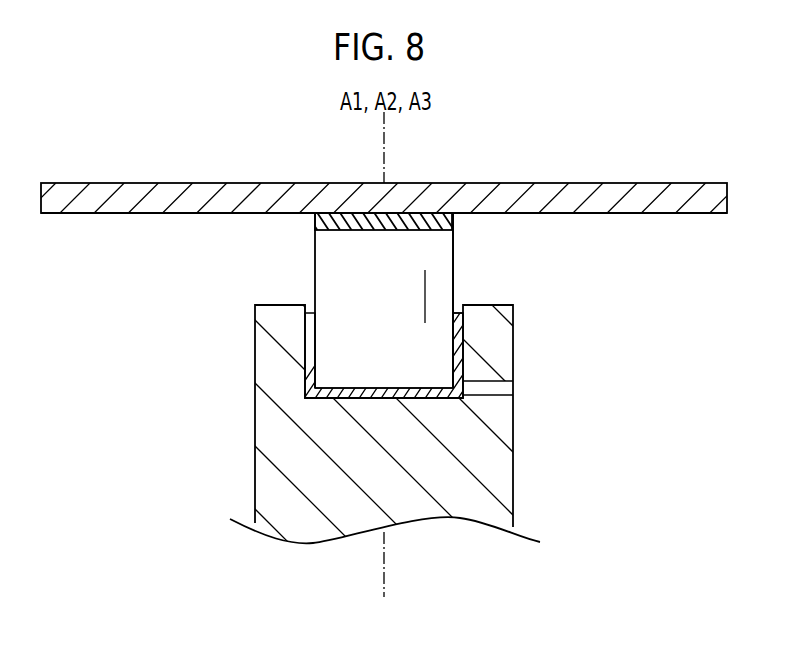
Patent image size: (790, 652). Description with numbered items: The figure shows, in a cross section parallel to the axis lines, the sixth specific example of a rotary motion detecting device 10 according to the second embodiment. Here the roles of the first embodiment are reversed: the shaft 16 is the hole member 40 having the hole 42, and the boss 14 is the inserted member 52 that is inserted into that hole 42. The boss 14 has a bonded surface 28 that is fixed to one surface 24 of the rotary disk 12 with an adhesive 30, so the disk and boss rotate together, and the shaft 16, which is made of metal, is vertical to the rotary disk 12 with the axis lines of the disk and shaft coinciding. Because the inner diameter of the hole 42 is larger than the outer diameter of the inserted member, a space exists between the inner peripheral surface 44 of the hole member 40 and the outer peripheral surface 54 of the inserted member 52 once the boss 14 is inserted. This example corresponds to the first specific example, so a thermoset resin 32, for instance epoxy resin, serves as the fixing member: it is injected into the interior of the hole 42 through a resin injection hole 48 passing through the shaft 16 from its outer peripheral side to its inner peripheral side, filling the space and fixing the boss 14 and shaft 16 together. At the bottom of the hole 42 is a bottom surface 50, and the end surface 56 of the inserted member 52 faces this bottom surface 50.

The rotary motion detecting device 10 is at (148, 93).
The rotary disk 12 is at (612, 197).
The boss 14 is at (373, 300).
The inserted member 52 is at (384, 300).
The shaft 16 is at (391, 408).
The hole member 40 is at (391, 425).
The one surface of the rotary disk 24 is at (112, 215).
The bonded surface 28 is at (386, 186).
The adhesive 30 is at (433, 222).
The thermoset resin 32 is at (422, 356).
The hole 42 is at (308, 299).
The inner peripheral surface 44 is at (456, 316).
The resin injection hole 48 is at (503, 388).
The bottom surface 50 is at (367, 389).
The outer peripheral surface 54 is at (455, 247).
The end surface 56 is at (397, 399).